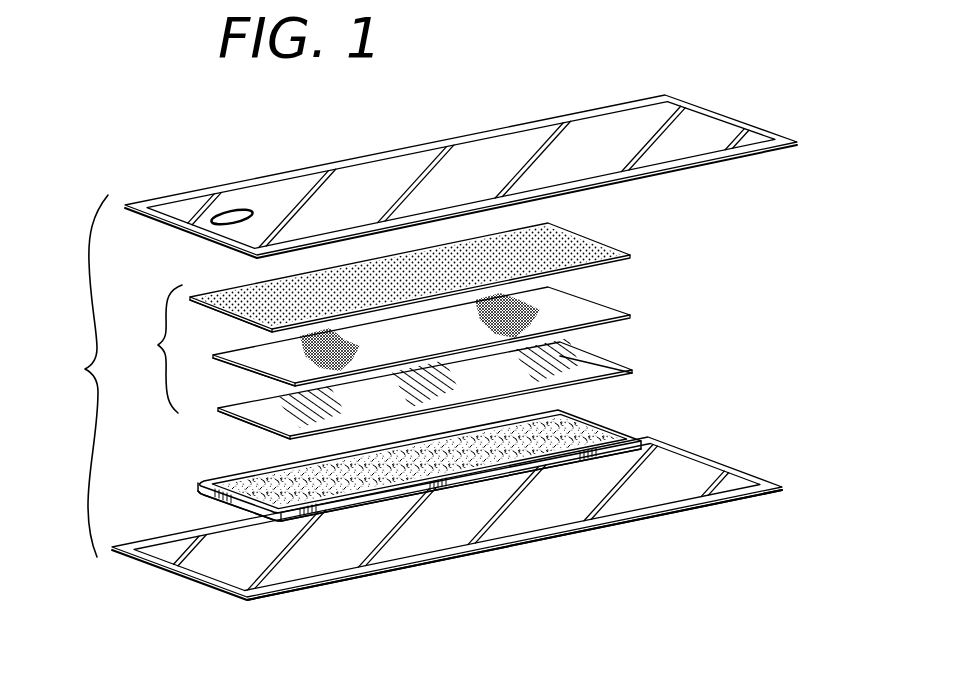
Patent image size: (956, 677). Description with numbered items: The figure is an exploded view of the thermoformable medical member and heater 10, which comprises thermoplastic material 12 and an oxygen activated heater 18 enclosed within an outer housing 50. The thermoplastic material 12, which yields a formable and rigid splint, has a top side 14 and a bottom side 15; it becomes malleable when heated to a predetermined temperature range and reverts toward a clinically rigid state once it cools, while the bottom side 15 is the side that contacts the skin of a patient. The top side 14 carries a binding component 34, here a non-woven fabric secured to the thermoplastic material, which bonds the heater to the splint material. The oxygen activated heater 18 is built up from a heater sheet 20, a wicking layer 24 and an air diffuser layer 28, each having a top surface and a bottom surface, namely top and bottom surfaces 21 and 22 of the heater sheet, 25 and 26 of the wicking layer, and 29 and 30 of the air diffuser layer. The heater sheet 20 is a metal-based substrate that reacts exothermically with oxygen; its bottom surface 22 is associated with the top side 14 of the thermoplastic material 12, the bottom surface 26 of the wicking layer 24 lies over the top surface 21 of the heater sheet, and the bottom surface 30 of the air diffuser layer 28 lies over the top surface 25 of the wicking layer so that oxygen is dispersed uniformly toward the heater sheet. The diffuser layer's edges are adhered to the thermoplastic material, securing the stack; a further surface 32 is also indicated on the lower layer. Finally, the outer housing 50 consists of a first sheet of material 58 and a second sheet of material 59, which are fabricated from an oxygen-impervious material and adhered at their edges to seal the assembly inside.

The thermoformable medical member and heater 10 is at (80, 376).
The thermoplastic material 12 is at (633, 425).
The top side 14 is at (203, 480).
The bottom side 15 is at (207, 495).
The oxygen activated heater 18 is at (156, 349).
The heater sheet 20 is at (626, 358).
The top surface 21 is at (583, 357).
The bottom surface 22 is at (598, 376).
The wicking layer 24 is at (616, 308).
The top surface 25 is at (587, 307).
The bottom surface 26 is at (243, 367).
The air diffuser layer 28 is at (608, 244).
The top surface 29 is at (562, 240).
The bottom surface 30 is at (236, 315).
The lower surface of lower layer 32 is at (262, 413).
The binding component 34 is at (593, 418).
The outer housing 50 is at (718, 108).
The first sheet of material 58 is at (223, 187).
The second sheet of material 59 is at (327, 583).